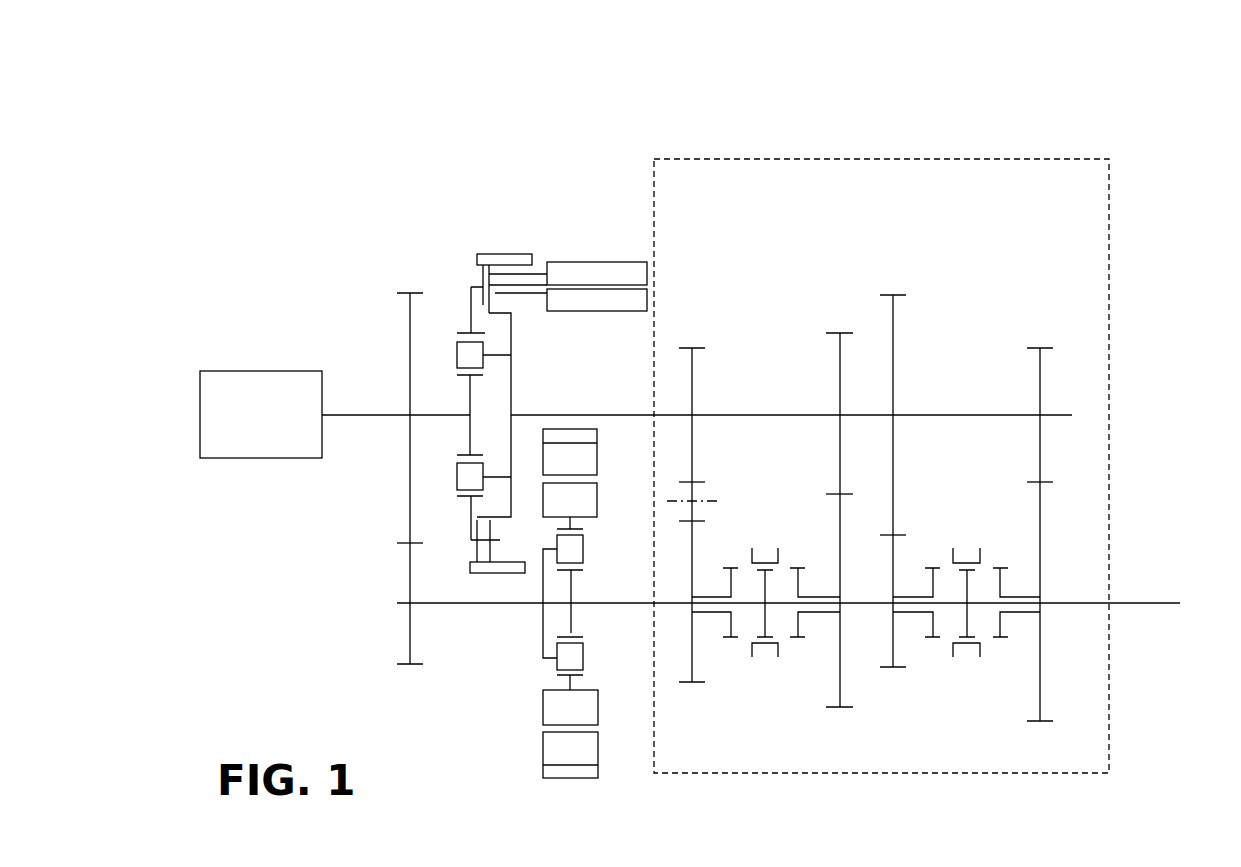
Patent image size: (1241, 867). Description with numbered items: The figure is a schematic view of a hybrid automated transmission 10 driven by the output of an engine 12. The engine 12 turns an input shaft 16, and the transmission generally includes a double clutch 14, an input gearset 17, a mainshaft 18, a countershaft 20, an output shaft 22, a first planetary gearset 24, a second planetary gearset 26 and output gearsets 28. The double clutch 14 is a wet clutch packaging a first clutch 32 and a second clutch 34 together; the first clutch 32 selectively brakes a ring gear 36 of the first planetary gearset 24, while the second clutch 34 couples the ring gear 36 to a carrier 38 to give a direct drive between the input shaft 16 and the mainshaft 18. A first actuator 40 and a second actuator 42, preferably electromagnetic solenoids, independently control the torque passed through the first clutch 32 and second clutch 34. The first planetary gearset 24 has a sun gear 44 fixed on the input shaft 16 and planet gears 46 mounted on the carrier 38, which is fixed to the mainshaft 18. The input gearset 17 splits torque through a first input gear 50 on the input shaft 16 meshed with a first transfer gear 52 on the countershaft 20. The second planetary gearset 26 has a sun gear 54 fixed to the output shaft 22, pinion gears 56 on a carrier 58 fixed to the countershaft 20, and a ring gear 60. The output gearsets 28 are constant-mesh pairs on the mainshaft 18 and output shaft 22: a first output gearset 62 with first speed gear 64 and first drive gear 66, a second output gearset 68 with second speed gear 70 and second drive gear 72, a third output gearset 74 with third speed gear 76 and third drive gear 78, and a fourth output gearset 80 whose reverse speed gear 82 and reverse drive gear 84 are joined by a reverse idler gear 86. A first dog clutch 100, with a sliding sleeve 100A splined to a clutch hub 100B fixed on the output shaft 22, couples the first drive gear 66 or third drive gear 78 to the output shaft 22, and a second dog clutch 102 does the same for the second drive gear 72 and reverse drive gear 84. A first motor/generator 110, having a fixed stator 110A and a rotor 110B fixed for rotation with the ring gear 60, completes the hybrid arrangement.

The hybrid automated transmission 10 is at (1157, 120).
The engine 12 is at (247, 378).
The double clutch 14 is at (496, 250).
The input shaft 16 is at (357, 413).
The input gearset 17 is at (396, 325).
The mainshaft 18 is at (598, 413).
The countershaft 20 is at (440, 604).
The output shaft 22 is at (1165, 600).
The first planetary gearset 24 is at (480, 411).
The second planetary gearset 26 is at (537, 656).
The output gearsets 28 is at (1090, 383).
The first clutch 32 is at (475, 275).
The second clutch 34 is at (497, 302).
The ring gear 36 is at (471, 312).
The carrier 38 is at (511, 380).
The first actuator 40 is at (589, 262).
The second actuator 42 is at (608, 311).
The sun gear 44 is at (463, 375).
The planet gears 46 is at (466, 352).
The first input gear 50 is at (410, 468).
The first transfer gear 52 is at (410, 630).
The sun gear 54 is at (571, 590).
The pinion gears 56 is at (583, 545).
The carrier 58 is at (543, 588).
The ring gear 60 is at (583, 673).
The first output gearset 62 is at (1018, 338).
The first speed gear 64 is at (1040, 380).
The first drive gear 66 is at (1040, 500).
The second output gearset 68 is at (831, 328).
The second speed gear 70 is at (840, 380).
The second drive gear 72 is at (840, 542).
The third output gearset 74 is at (925, 280).
The third speed gear 76 is at (893, 328).
The third drive gear 78 is at (893, 563).
The fourth output gearset 80 is at (706, 333).
The reverse speed gear 82 is at (694, 385).
The reverse drive gear 84 is at (692, 557).
The reverse idler gear 86 is at (702, 492).
The first dog clutch 100 is at (1004, 671).
The sliding sleeve 100A is at (1012, 522).
The clutch hub 100B is at (967, 618).
The second dog clutch 102 is at (787, 653).
The first motor/generator 110 is at (528, 763).
The stator 110A is at (550, 752).
The rotor 110B is at (548, 708).